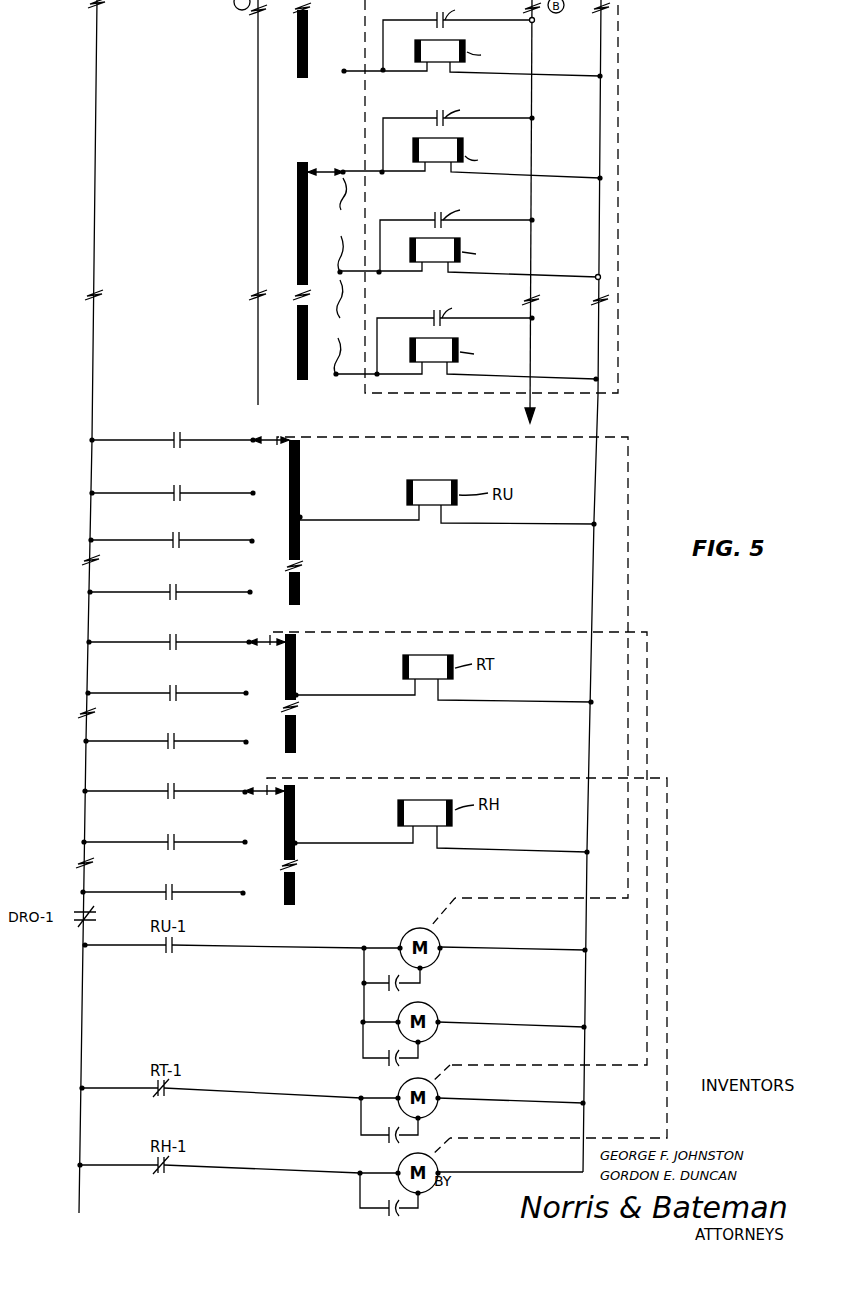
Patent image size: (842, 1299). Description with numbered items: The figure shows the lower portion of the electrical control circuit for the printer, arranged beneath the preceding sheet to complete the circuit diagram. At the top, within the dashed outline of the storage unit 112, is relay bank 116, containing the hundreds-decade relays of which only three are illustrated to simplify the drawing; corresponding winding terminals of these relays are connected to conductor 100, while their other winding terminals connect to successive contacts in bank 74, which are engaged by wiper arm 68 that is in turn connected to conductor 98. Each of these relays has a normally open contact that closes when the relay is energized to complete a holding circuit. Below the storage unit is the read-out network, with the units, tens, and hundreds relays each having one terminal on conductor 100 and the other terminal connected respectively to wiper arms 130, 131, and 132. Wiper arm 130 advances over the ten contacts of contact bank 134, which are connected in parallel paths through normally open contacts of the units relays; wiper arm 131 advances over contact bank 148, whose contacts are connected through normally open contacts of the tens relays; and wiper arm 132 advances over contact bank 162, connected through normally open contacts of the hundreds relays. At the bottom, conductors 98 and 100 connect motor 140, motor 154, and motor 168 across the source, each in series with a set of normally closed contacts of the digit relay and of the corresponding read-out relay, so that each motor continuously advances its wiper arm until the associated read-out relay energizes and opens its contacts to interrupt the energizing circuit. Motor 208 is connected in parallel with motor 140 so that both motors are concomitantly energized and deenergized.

The conductor 98 is at (97, 22).
The conductor 100 is at (604, 28).
The storage unit 112 is at (620, 142).
The bank 116 is at (388, 101).
The wiper arm 68 is at (334, 170).
The bank 74 is at (339, 276).
The contact bank 134 is at (253, 490).
The wiper arm 130 is at (268, 446).
The contact bank 148 is at (249, 646).
The wiper arm 131 is at (268, 648).
The contact bank 162 is at (245, 790).
The wiper arm 132 is at (264, 798).
The electric motor 140 is at (436, 934).
The motor 208 is at (436, 1006).
The electric motor 154 is at (430, 1082).
The electric motor 168 is at (430, 1156).